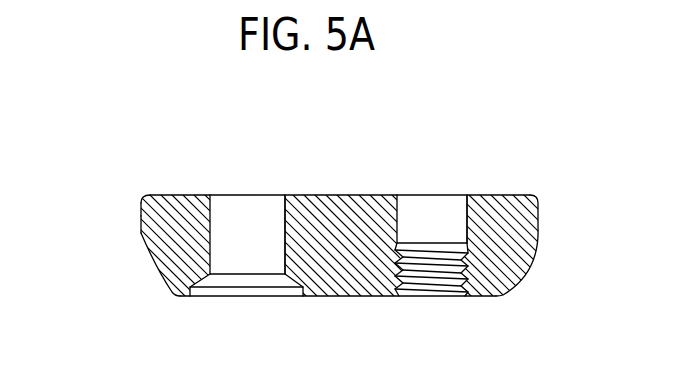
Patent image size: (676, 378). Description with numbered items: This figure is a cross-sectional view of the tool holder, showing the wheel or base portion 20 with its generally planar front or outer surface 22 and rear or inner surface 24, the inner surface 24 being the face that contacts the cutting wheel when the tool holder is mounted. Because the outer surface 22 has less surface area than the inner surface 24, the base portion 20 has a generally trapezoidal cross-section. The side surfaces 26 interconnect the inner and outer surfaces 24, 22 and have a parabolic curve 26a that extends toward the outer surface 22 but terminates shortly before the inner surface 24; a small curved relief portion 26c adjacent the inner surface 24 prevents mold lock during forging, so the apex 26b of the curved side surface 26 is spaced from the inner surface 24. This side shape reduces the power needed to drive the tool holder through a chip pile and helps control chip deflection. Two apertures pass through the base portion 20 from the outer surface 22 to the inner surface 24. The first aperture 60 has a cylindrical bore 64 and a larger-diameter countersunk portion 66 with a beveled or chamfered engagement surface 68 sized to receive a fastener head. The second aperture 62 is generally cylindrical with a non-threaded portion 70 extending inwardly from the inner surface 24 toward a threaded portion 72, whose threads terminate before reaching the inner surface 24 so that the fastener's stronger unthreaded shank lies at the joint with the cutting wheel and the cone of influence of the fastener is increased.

The wheel or base portion 20 is at (541, 239).
The front or outer surface 22 is at (490, 297).
The rear or inner surface 24 is at (350, 195).
The side surface 26 is at (145, 248).
The parabolic curve or curved portion 26a is at (140, 233).
The apex 26b is at (138, 210).
The relief portion 26c is at (143, 198).
The first aperture 60 is at (237, 218).
The second aperture 62 is at (423, 212).
The cylindrical bore 64 is at (284, 200).
The counterbore or counter sunk portion 66 is at (222, 297).
The beveled or chamfered engagement surface 68 is at (288, 288).
The non-threaded portion 70 is at (466, 203).
The threaded portion 72 is at (417, 297).